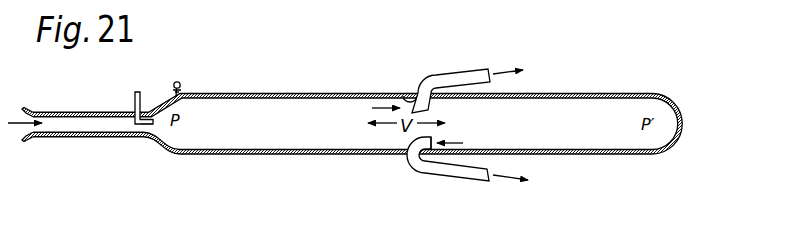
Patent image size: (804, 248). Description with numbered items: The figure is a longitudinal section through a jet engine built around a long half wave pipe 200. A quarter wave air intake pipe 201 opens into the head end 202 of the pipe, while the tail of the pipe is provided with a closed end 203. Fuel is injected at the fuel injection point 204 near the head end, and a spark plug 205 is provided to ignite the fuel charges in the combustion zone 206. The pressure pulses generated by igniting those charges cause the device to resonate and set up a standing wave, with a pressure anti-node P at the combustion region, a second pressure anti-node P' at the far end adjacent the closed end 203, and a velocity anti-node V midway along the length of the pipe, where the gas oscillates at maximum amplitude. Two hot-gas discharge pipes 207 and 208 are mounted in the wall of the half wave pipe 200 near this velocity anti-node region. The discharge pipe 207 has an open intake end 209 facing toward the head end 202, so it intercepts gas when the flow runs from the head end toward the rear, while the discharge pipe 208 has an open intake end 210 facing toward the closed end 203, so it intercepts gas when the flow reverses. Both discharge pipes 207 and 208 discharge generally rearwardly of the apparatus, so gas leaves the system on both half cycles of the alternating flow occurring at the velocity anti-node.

The half wave pipe 200 is at (262, 94).
The quarter wave air intake pipe 201 is at (83, 138).
The head end 202 is at (161, 101).
The closed end 203 is at (679, 109).
The fuel injection point 204 is at (145, 129).
The spark plug 205 is at (182, 88).
The combustion zone 206 is at (185, 146).
The hot-gas discharge pipe 207 is at (452, 77).
The hot-gas discharge pipe 208 is at (455, 172).
The open intake end 209 is at (405, 94).
The open intake end 210 is at (431, 139).